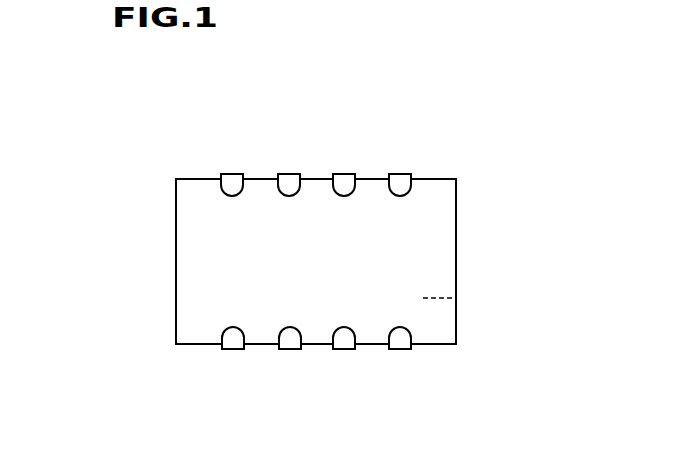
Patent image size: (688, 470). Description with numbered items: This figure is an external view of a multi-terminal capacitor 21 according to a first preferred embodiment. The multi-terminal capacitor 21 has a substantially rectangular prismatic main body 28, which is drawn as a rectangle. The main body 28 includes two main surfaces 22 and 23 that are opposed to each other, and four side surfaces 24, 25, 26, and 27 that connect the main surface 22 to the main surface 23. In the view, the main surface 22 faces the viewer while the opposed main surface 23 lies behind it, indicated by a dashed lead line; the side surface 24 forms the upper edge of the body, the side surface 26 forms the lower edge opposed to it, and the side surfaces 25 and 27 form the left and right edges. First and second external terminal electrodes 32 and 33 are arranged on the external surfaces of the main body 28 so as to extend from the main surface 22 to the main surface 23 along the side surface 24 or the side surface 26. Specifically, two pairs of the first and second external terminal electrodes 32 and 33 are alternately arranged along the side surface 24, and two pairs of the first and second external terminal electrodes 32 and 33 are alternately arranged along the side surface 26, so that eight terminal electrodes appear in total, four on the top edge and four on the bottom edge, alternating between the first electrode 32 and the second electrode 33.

The multi-terminal capacitor 21 is at (160, 87).
The main surface 22 is at (440, 208).
The main surface 23 is at (456, 298).
The side surface 24 is at (317, 179).
The side surface 25 is at (176, 268).
The side surface 26 is at (312, 344).
The side surface 27 is at (456, 252).
The main body 28 is at (176, 211).
The first external terminal electrode 32 is at (232, 183).
The second external terminal electrode 33 is at (289, 183).